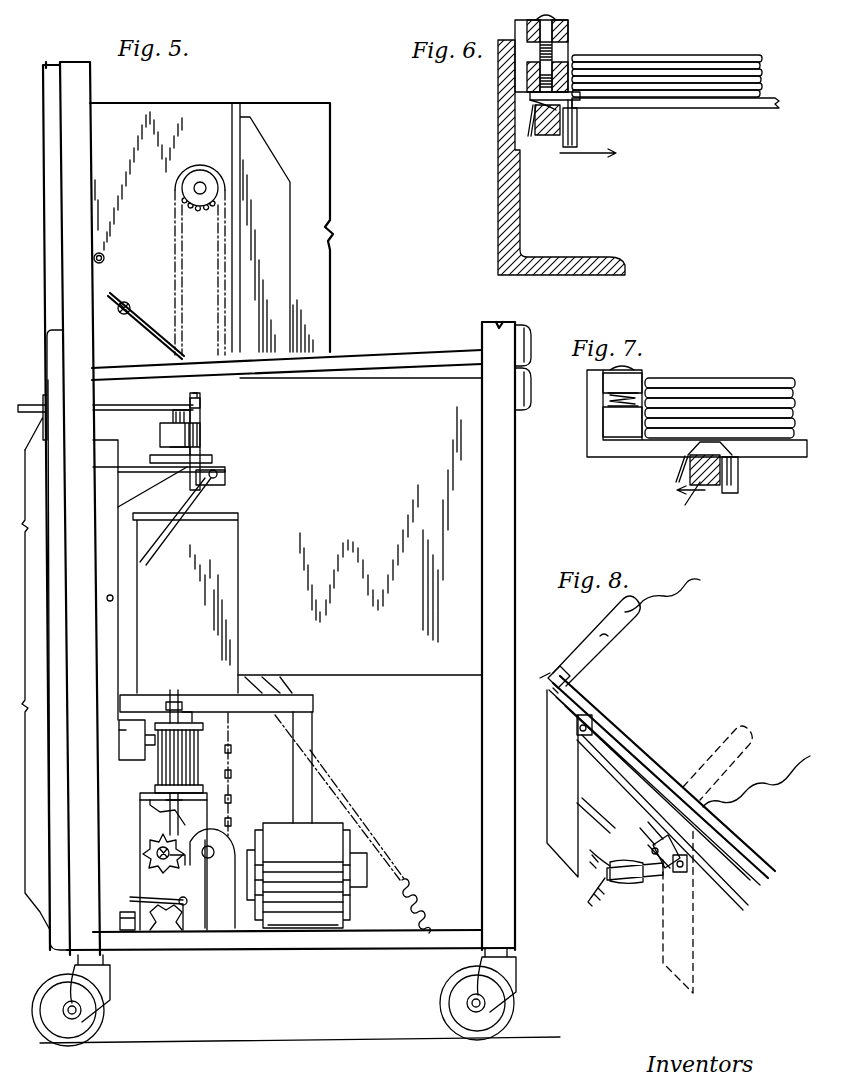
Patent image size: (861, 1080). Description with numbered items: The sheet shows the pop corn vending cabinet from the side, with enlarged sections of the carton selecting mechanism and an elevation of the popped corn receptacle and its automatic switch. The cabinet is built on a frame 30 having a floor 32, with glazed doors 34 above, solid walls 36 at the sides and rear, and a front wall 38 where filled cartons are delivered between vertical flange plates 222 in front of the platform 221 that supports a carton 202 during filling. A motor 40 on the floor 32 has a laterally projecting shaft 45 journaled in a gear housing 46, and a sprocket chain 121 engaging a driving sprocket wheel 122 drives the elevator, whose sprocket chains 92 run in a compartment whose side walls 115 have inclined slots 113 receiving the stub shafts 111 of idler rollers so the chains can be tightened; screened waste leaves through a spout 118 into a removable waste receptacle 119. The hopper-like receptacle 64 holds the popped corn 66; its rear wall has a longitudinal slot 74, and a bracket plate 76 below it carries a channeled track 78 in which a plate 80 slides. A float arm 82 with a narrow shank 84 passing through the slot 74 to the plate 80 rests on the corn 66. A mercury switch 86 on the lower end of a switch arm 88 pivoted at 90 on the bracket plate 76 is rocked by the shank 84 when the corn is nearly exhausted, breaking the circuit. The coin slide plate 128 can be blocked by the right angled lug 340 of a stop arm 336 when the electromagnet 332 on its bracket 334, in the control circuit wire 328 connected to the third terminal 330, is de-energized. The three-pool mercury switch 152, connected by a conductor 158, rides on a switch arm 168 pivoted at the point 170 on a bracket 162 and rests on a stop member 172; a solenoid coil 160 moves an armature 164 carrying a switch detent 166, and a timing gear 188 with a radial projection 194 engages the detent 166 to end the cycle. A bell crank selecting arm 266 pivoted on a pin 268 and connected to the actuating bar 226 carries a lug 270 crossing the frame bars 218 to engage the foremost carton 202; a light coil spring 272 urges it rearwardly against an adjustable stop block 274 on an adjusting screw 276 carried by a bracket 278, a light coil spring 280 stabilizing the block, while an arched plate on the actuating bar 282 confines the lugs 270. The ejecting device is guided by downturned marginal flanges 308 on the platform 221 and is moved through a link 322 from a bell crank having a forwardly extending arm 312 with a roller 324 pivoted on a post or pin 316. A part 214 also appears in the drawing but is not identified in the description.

In FIG. 5, the frame 30 is at (279, 508).
In FIG. 6, the frame 30 is at (518, 232).
In FIG. 5, the floor 32 is at (365, 928).
In FIG. 5, the glazed doors 34 is at (531, 334).
In FIG. 5, the solid walls 36 is at (531, 386).
In FIG. 5, the front wall 38 is at (57, 636).
In FIG. 5, the motor 40 is at (307, 875).
In FIG. 5, the motor shaft 45 is at (212, 847).
In FIG. 5, the gear housing 46 is at (218, 884).
In FIG. 5, the receptacle 64 is at (378, 362).
In FIG. 8, the popped corn 66 is at (693, 575).
In FIG. 8, the longitudinal slot 74 is at (634, 748).
In FIG. 8, the bracket plate 76 is at (718, 920).
In FIG. 8, the channeled track 78 is at (730, 870).
In FIG. 8, the plate 80 is at (595, 728).
In FIG. 8, the float arm 82 is at (590, 633).
In FIG. 8, the shank 84 is at (549, 669).
In FIG. 8, the mercury switch 86 is at (625, 882).
In FIG. 8, the switch arm 88 is at (642, 826).
In FIG. 8, the pivot 90 is at (648, 849).
In FIG. 8, the sprocket chains 92 is at (670, 853).
In FIG. 5, the stub shafts 111 is at (131, 306).
In FIG. 5, the inclined slots 113 is at (146, 326).
In FIG. 5, the side walls 115 is at (204, 232).
In FIG. 5, the spout 118 is at (201, 415).
In FIG. 5, the waste receptacle 119 is at (185, 603).
In FIG. 5, the sprocket chain 121 is at (179, 252).
In FIG. 5, the driving sprocket wheel 122 is at (203, 170).
In FIG. 5, the slide plate 128 is at (38, 404).
In FIG. 5, the three-pool mercury switch 152 is at (161, 908).
In FIG. 5, the conductor 158 is at (145, 925).
In FIG. 5, the solenoid coil 160 is at (157, 760).
In FIG. 5, the bracket 162 is at (172, 865).
In FIG. 5, the armature 164 is at (165, 805).
In FIG. 5, the switch detent 166 is at (200, 830).
In FIG. 5, the switch arm 168 is at (133, 896).
In FIG. 5, the pivot point 170 is at (187, 905).
In FIG. 5, the stop member 172 is at (118, 920).
In FIG. 5, the timing gear 188 is at (148, 853).
In FIG. 5, the projection 194 is at (192, 861).
In FIG. 6, the carton 202 is at (680, 58).
In FIG. 7, the carton 202 is at (690, 378).
In FIG. 5, the cord 214 is at (420, 888).
In FIG. 6, the frame bars 218 is at (663, 108).
In FIG. 7, the frame bars 218 is at (618, 457).
In FIG. 5, the platform 221 is at (270, 687).
In FIG. 5, the flange plates 222 is at (40, 760).
In FIG. 6, the actuating bar 226 is at (550, 137).
In FIG. 7, the actuating bar 226 is at (710, 487).
In FIG. 6, the selecting arm 266 is at (525, 133).
In FIG. 7, the selecting arm 266 is at (681, 502).
In FIG. 6, the pin 268 is at (530, 100).
In FIG. 7, the pin 268 is at (668, 469).
In FIG. 6, the lug 270 is at (580, 96).
In FIG. 7, the lug 270 is at (738, 472).
In FIG. 7, the coil spring 272 is at (728, 446).
In FIG. 6, the stop block 274 is at (567, 55).
In FIG. 7, the stop block 274 is at (622, 422).
In FIG. 6, the adjusting screw 276 is at (540, 15).
In FIG. 7, the adjusting screw 276 is at (628, 368).
In FIG. 6, the bracket 278 is at (560, 30).
In FIG. 7, the bracket 278 is at (622, 383).
In FIG. 6, the coil spring 280 is at (545, 45).
In FIG. 7, the coil spring 280 is at (603, 400).
In FIG. 6, the actuating bar 282 is at (578, 132).
In FIG. 7, the actuating bar 282 is at (740, 490).
In FIG. 5, the downturned marginal flanges 308 is at (175, 693).
In FIG. 5, the forwardly extending arm 312 is at (175, 690).
In FIG. 5, the post or pin 316 is at (185, 712).
In FIG. 5, the link 322 is at (119, 732).
In FIG. 5, the roller 324 is at (148, 718).
In FIG. 8, the circuit wire 328 is at (590, 905).
In FIG. 5, the third terminal 330 is at (180, 925).
In FIG. 5, the electromagnet 332 is at (201, 437).
In FIG. 5, the bracket 334 is at (215, 468).
In FIG. 5, the stop arm 336 is at (120, 413).
In FIG. 5, the right angled lug 340 is at (201, 400).